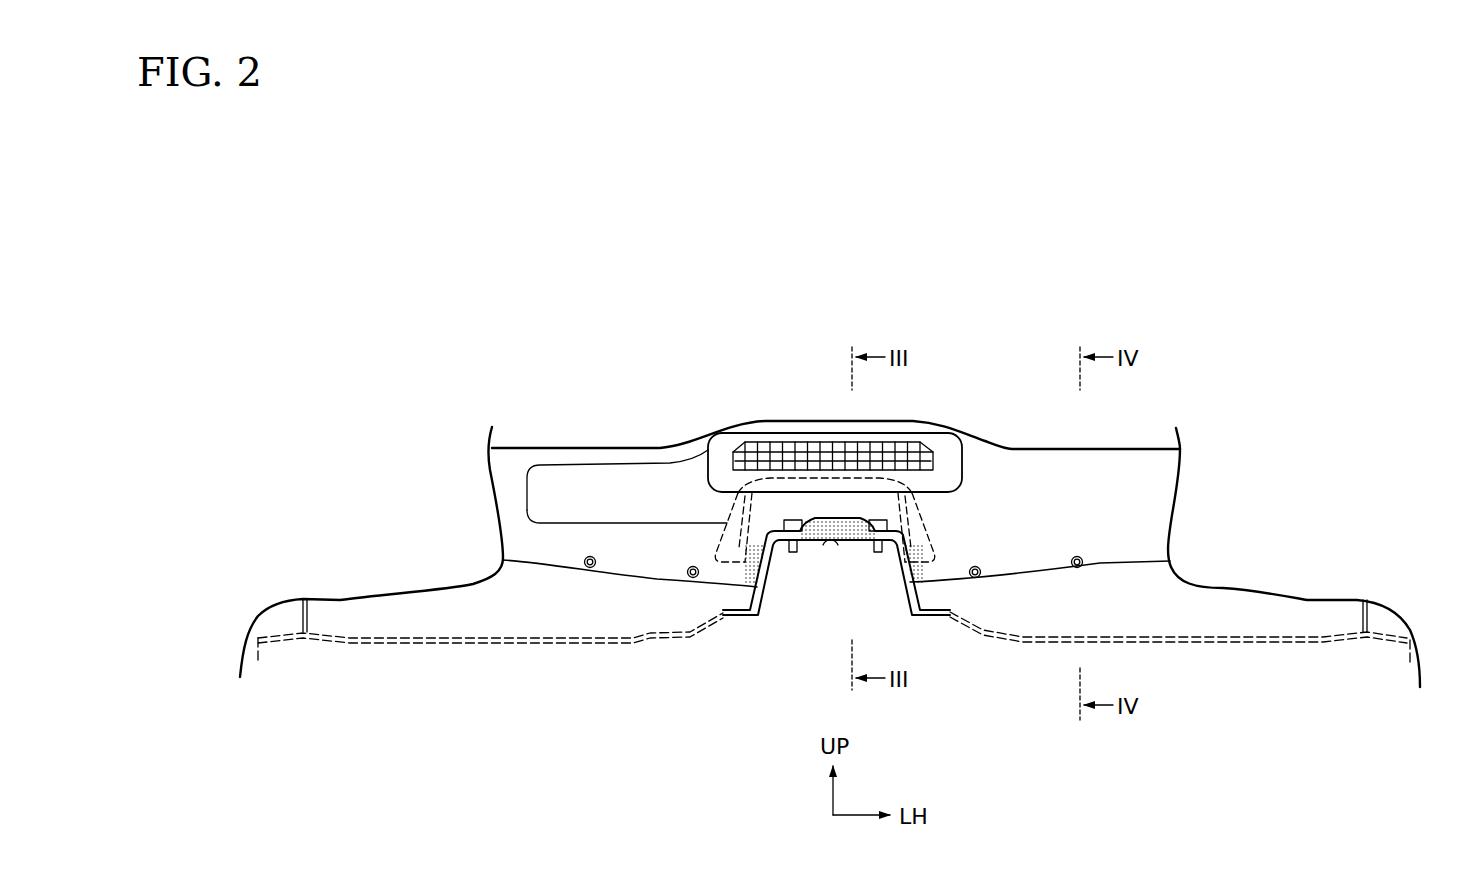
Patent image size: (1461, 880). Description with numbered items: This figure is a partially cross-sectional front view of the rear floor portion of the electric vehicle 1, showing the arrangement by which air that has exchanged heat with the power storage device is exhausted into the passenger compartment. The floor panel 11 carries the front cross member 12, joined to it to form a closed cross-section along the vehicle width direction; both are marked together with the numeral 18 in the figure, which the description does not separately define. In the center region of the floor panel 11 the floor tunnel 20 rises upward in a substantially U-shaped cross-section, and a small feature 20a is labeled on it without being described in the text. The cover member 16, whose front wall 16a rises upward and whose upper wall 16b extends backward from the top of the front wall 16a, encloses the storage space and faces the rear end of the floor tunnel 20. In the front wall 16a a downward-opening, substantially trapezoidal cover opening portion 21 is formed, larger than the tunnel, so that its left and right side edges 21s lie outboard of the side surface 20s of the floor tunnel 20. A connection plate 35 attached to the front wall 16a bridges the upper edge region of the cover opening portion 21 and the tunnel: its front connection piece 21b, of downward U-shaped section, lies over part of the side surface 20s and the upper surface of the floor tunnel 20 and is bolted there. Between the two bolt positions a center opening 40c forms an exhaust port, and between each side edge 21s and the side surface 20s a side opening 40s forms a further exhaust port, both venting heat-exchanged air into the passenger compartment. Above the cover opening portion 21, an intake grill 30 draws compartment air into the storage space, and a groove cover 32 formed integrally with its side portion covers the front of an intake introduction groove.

The electric vehicle 1 is at (1190, 363).
The floor panel 11 is at (592, 640).
The front cross member 12 is at (1140, 573).
The bumper beam 18 is at (834, 655).
The cover member 16 is at (985, 432).
The front wall 16a is at (1063, 523).
The upper wall 16b is at (1107, 450).
The floor tunnel 20 is at (750, 575).
The bracket hole 20a is at (828, 538).
The side surface 20s is at (912, 552).
The cover opening portion 21 is at (825, 520).
The front connection piece 21b is at (837, 523).
The side edge 21s is at (905, 552).
The intake grill 30 is at (772, 436).
The groove cover 32 is at (600, 480).
The connection plate 35 is at (742, 508).
The center opening 40c is at (858, 522).
The side opening 40s is at (643, 580).